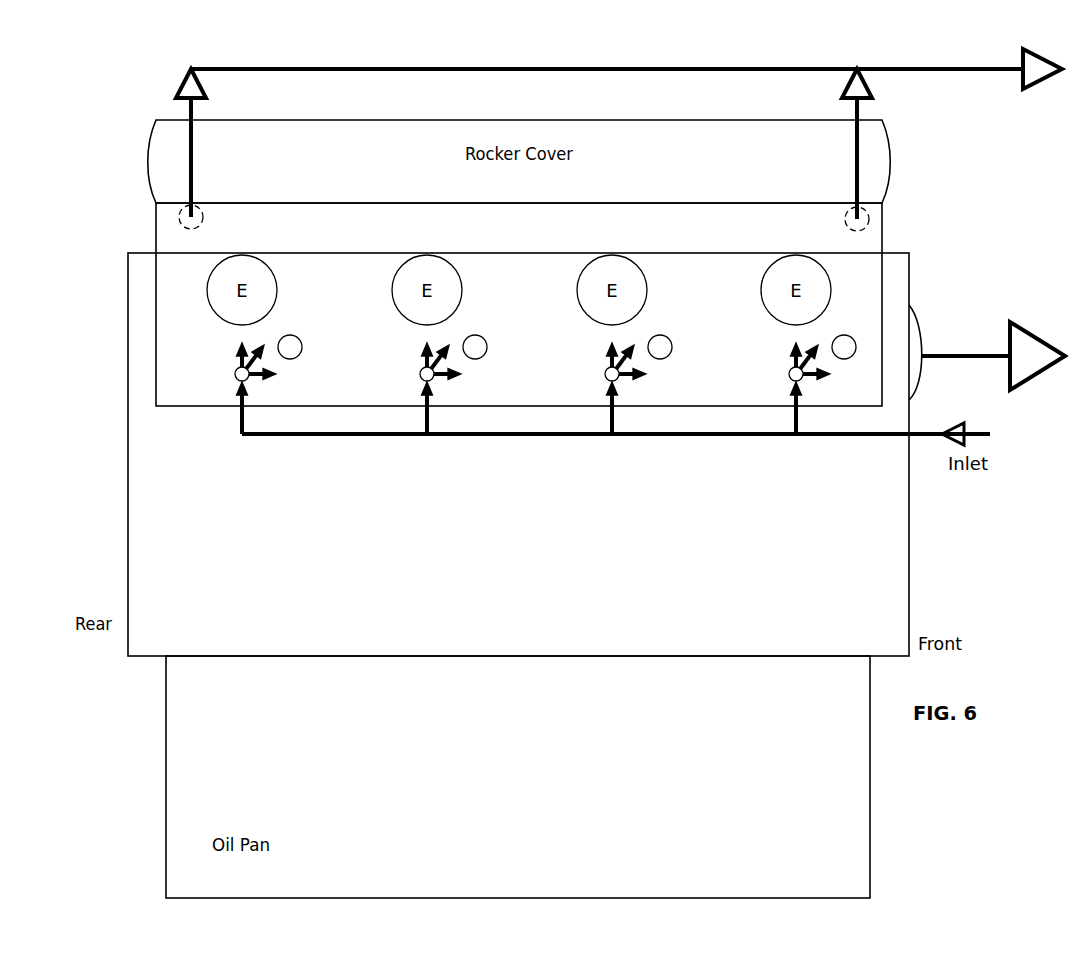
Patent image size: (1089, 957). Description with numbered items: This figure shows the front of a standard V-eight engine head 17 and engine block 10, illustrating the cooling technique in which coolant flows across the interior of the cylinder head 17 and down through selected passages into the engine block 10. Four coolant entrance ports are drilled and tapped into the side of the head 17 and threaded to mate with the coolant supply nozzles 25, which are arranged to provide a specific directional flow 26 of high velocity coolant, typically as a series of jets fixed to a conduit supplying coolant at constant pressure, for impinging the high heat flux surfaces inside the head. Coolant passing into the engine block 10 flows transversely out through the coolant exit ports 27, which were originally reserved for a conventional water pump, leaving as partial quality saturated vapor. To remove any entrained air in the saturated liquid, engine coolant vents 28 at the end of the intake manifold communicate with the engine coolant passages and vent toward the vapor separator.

The engine block 10 is at (855, 584).
The engine cylinder head 17 is at (180, 249).
The coolant supply nozzles 25 is at (228, 369).
The directional flow 26 is at (269, 337).
The coolant exit ports 27 is at (913, 332).
The engine coolant vents 28 is at (197, 207).